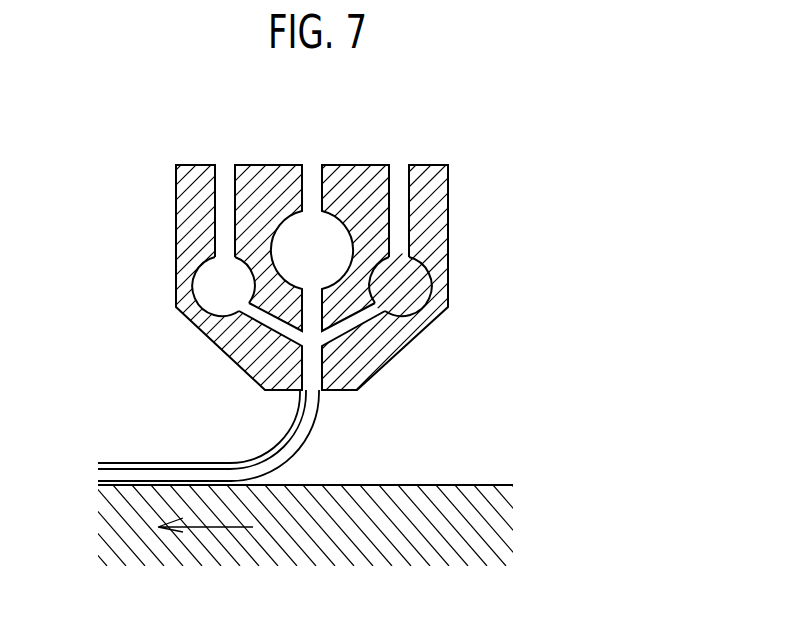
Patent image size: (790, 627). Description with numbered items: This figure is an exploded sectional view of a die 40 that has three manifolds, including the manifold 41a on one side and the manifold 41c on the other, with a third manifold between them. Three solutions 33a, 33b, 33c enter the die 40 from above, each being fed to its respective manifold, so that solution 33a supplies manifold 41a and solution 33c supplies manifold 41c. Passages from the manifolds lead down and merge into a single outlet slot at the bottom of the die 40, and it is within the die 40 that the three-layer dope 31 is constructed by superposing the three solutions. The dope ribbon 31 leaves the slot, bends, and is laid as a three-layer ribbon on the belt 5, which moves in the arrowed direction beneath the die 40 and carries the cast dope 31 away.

The die 40 is at (395, 210).
The manifold 41a is at (426, 282).
The manifold 41c is at (195, 284).
The solution 33a is at (227, 150).
The solution 33b is at (312, 150).
The solution 33c is at (402, 150).
The dope ribbon 31 is at (320, 423).
The belt 5 is at (460, 485).